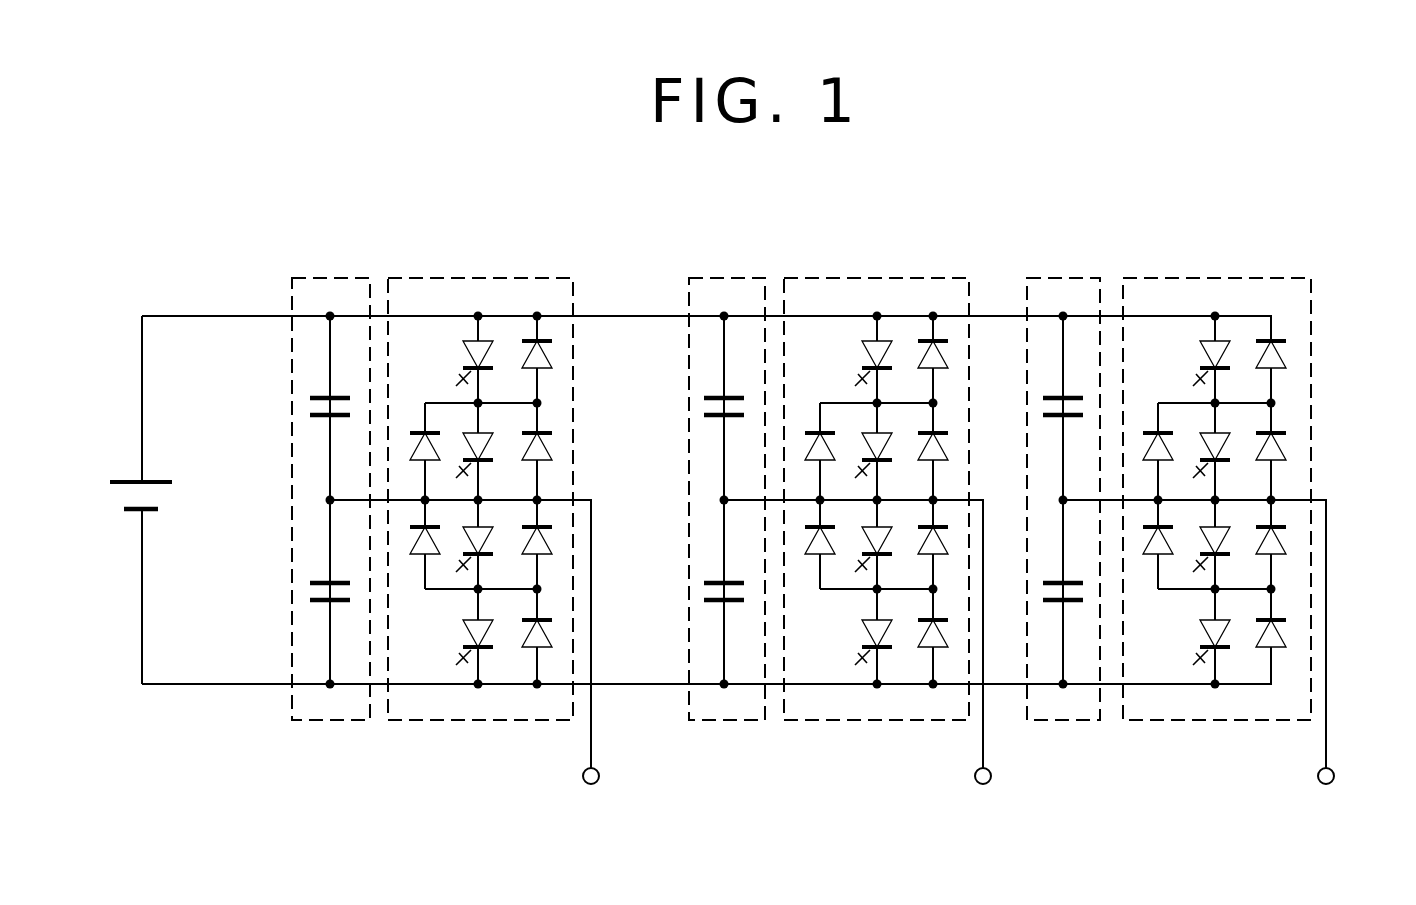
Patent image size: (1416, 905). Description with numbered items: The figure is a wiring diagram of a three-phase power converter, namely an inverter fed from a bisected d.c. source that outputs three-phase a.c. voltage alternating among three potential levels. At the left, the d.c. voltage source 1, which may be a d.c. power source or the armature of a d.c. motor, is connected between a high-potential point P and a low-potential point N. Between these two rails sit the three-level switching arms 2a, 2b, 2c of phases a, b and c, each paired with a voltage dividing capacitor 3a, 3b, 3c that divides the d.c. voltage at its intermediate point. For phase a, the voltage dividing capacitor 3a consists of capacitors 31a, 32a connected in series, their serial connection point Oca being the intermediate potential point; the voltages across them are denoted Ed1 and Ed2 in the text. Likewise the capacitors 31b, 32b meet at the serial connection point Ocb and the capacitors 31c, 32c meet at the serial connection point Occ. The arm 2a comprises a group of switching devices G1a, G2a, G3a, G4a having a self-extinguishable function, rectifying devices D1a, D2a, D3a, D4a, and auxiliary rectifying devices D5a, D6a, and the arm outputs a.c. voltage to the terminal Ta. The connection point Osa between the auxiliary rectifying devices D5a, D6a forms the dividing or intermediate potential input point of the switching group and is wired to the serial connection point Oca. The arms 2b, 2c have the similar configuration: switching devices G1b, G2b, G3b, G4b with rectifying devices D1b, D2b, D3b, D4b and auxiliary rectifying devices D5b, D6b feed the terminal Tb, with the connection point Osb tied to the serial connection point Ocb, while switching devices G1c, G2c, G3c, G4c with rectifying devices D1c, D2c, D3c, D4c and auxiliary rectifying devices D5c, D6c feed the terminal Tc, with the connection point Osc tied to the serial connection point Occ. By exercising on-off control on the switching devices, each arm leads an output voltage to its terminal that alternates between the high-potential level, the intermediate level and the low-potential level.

The d.c. voltage source 1 is at (128, 478).
The 3-level switching arm of phase a 2a is at (481, 278).
The 3-level switching arm of phase b 2b is at (878, 278).
The 3-level switching arm of phase c 2c is at (1216, 278).
The voltage dividing capacitor 3a is at (331, 278).
The voltage dividing capacitor 3b is at (726, 278).
The voltage dividing capacitor 3c is at (1064, 278).
The capacitor 31a is at (310, 395).
The capacitor 31b is at (718, 395).
The capacitor 31c is at (1062, 395).
The capacitor 32a is at (312, 590).
The capacitor 32b is at (728, 603).
The capacitor 32c is at (1068, 603).
The switching device G1a is at (445, 354).
The switching device G2a is at (497, 433).
The switching device G3a is at (490, 555).
The switching device G4a is at (443, 647).
The switching device G1b is at (862, 355).
The switching device G2b is at (895, 433).
The switching device G3b is at (890, 553).
The switching device G4b is at (862, 633).
The switching device G1c is at (1200, 357).
The switching device G2c is at (1233, 433).
The switching device G3c is at (1230, 553).
The switching device G4c is at (1200, 633).
The rectifying device D1a is at (550, 355).
The rectifying device D2a is at (550, 452).
The rectifying device D3a is at (550, 540).
The rectifying device D4a is at (550, 638).
The auxiliary rectifying device D5a is at (410, 443).
The auxiliary rectifying device D6a is at (410, 545).
The rectifying device D1b is at (945, 355).
The rectifying device D2b is at (945, 452).
The rectifying device D3b is at (945, 540).
The rectifying device D4b is at (945, 640).
The auxiliary rectifying device D5b is at (805, 448).
The auxiliary rectifying device D6b is at (805, 545).
The rectifying device D1c is at (1288, 355).
The rectifying device D2c is at (1285, 452).
The rectifying device D3c is at (1285, 540).
The rectifying device D4c is at (1285, 640).
The auxiliary rectifying device D5c is at (1143, 447).
The auxiliary rectifying device D6c is at (1143, 545).
The high-potential point P is at (140, 293).
The low-potential point N is at (142, 707).
The serial connection point Oca is at (289, 500).
The serial connection point Ocb is at (684, 500).
The serial connection point Occ is at (1023, 500).
The connection point Osa is at (379, 487).
The connection point Osb is at (776, 485).
The connection point Osc is at (1110, 485).
The terminal Ta is at (587, 794).
The terminal Tb is at (982, 794).
The terminal Tc is at (1322, 796).